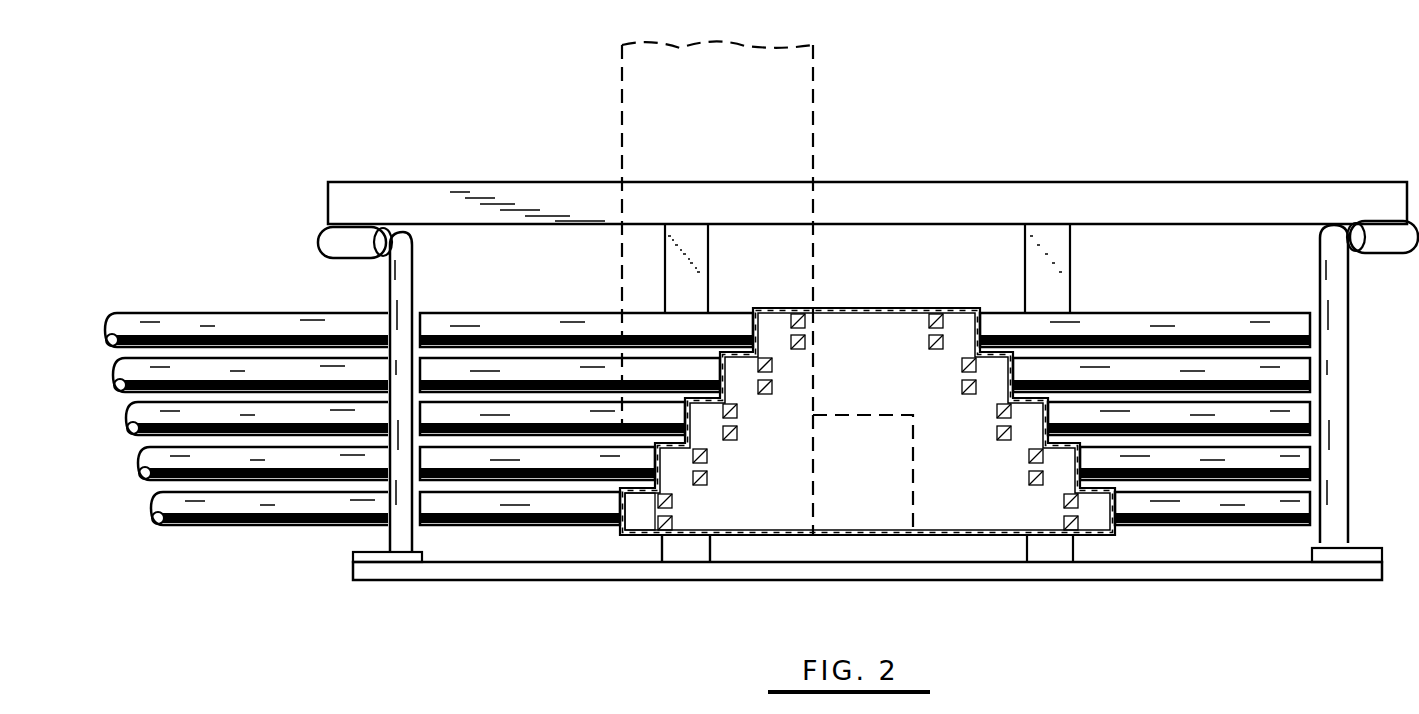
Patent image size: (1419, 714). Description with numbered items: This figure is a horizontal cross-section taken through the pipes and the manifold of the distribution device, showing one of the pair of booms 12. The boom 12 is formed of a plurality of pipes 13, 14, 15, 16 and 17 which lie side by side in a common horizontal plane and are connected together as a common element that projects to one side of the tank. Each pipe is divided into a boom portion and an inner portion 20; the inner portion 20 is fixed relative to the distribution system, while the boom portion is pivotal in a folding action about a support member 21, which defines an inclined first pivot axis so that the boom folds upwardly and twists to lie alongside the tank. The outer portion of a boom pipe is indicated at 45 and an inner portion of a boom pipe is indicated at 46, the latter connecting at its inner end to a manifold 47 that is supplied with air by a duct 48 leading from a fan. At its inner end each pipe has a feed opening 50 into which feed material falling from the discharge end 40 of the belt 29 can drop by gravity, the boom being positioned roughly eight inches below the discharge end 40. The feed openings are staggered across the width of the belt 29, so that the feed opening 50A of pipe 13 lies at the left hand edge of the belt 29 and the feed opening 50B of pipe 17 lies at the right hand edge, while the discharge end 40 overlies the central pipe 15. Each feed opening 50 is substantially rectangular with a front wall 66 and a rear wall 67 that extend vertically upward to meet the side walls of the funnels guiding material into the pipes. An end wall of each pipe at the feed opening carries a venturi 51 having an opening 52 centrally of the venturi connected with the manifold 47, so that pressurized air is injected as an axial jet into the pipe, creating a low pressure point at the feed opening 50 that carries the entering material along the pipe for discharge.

The boom 12 is at (700, 401).
The pipe 13 is at (284, 332).
The pipe 14 is at (196, 380).
The pipe 15 is at (176, 425).
The pipe 16 is at (193, 470).
The pipe 17 is at (259, 516).
The inner portion 20 is at (503, 300).
The support member 21 is at (398, 292).
The belt 29 is at (652, 74).
The discharge end 40 is at (818, 442).
The outer portion of boom pipe 45 is at (300, 538).
The inner portion of boom pipe 46 is at (480, 535).
The manifold 47 is at (817, 438).
The duct 48 is at (888, 488).
The feed opening 50 is at (679, 466).
The feed opening 50A is at (774, 325).
The feed opening 50B is at (640, 526).
The venturi 51 is at (665, 540).
The opening 52 is at (674, 514).
The front wall 66 is at (746, 392).
The rear wall 67 is at (744, 372).